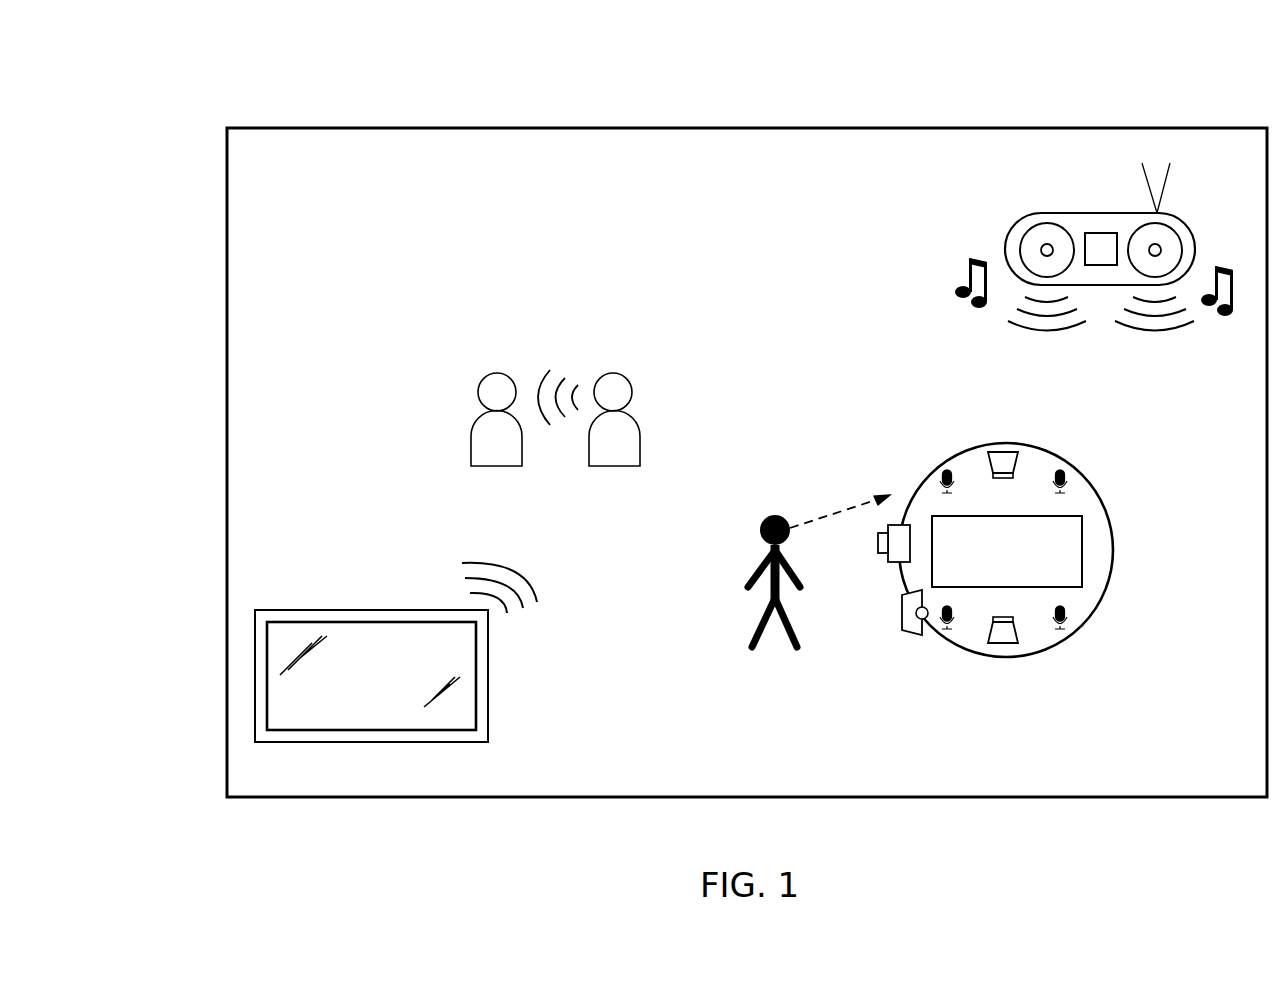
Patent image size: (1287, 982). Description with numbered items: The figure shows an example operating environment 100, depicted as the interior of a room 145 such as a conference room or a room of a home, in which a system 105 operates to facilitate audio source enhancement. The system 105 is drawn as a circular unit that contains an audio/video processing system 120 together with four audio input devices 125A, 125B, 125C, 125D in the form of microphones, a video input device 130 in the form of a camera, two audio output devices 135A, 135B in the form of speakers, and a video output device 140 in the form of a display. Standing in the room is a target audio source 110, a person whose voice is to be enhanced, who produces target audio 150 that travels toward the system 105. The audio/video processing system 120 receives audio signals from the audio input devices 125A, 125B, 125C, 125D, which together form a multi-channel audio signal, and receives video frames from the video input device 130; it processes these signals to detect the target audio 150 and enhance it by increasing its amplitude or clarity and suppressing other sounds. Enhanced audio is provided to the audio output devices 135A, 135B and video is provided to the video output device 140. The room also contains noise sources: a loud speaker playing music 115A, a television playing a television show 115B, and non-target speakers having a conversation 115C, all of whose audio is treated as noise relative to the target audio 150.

The operating environment 100 is at (152, 73).
The room 145 is at (260, 128).
The system 105 is at (1012, 441).
The target audio source 110 is at (760, 530).
The noise source 115A is at (1045, 213).
The noise source 115B is at (372, 610).
The noise source 115C is at (633, 418).
The audio/video processing system 120 is at (1087, 547).
The audio input device 125A is at (940, 478).
The audio input device 125B is at (1065, 468).
The audio input device 125C is at (948, 630).
The audio input device 125D is at (1065, 630).
The video input device 130 is at (897, 566).
The audio output device 135A is at (1001, 442).
The audio output device 135B is at (1005, 648).
The video output device 140 is at (907, 634).
The target audio 150 is at (812, 523).